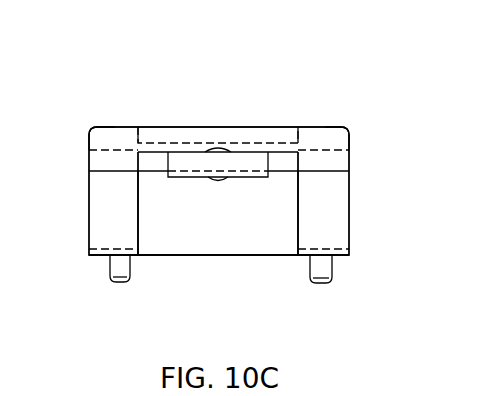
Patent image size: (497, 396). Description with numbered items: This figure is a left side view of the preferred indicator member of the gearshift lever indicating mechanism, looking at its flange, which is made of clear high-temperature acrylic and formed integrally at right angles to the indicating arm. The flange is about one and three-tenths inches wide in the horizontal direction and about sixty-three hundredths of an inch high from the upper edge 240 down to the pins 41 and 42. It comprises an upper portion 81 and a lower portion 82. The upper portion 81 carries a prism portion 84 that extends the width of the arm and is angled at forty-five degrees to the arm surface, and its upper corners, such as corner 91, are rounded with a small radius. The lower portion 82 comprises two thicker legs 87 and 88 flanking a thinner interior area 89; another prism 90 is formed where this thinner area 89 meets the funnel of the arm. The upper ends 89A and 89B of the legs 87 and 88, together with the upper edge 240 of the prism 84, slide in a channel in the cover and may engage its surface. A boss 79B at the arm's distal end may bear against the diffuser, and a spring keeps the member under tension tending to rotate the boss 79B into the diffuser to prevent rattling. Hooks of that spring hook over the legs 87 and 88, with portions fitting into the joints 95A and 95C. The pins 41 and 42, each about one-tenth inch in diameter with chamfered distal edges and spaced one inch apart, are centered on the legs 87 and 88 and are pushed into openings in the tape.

The upper end of leg 89A is at (117, 127).
The upper end of leg 89B is at (312, 127).
The upper edge 240 is at (167, 127).
The prism portion 84 is at (223, 137).
The upper corner 91 is at (92, 125).
The upper portion 81 is at (350, 138).
The joint 95A is at (110, 150).
The joint 95C is at (102, 172).
The leg 88 is at (98, 203).
The lower portion 82 is at (350, 208).
The leg 87 is at (340, 240).
The prism 90 is at (207, 163).
The boss 79B is at (215, 178).
The pin 42 is at (110, 268).
The pin 41 is at (327, 272).
The interior area 89 is at (228, 250).